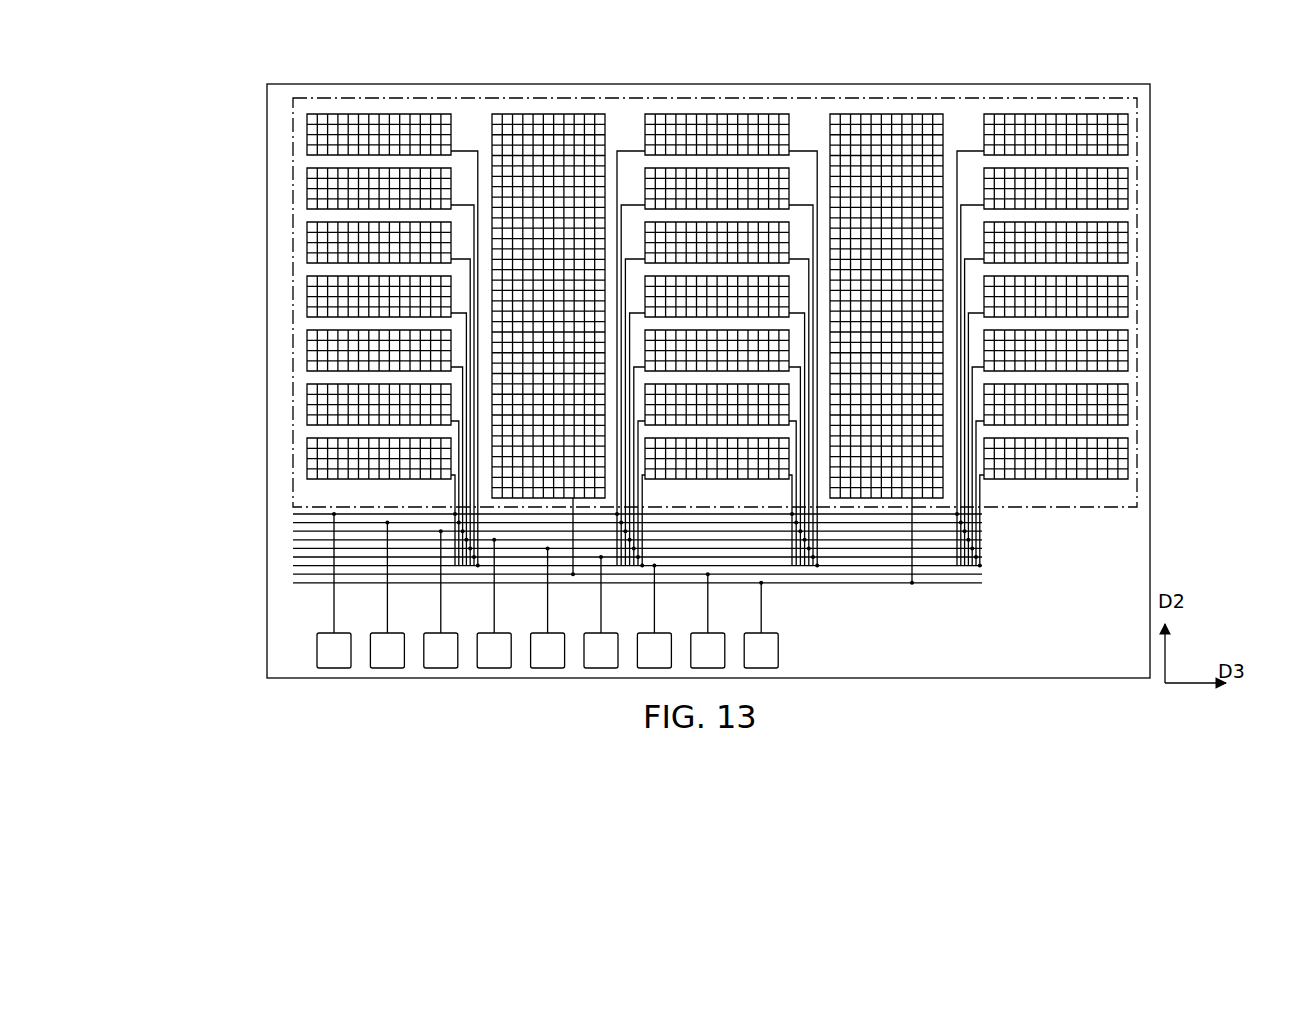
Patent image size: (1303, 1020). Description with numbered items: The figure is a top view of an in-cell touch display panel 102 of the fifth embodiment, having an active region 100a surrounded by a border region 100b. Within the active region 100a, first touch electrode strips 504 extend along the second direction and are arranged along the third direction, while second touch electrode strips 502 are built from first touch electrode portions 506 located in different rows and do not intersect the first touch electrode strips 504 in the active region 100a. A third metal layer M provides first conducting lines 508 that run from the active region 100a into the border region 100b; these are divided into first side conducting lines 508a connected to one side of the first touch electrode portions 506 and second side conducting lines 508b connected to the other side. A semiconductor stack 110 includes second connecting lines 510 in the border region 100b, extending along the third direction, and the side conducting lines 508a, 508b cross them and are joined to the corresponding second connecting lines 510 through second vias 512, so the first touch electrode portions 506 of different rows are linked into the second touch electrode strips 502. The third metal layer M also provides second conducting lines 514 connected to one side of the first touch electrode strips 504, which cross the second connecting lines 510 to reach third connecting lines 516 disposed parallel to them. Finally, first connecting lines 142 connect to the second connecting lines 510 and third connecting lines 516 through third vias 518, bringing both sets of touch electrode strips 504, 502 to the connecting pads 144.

The display device / substrate 102 is at (1152, 76).
The active region 100a is at (975, 104).
The border region 100b is at (1078, 91).
The second touch electrode strips 502 is at (297, 129).
The first touch electrode strips 504 is at (548, 107).
The first touch electrode portions 506 is at (728, 118).
The first conducting lines 508 is at (727, 309).
The first side conducting lines 508a is at (621, 150).
The second side conducting lines 508b is at (811, 309).
The third metal layer M is at (727, 286).
The semiconductor stack 110 is at (573, 544).
The second connecting lines 510 is at (293, 540).
The third connecting lines 516 is at (310, 586).
The second vias 512 is at (478, 569).
The second conducting lines 514 is at (577, 540).
The third vias 518 is at (913, 592).
The first connecting lines 142 is at (335, 597).
The connecting pads 144 is at (336, 668).